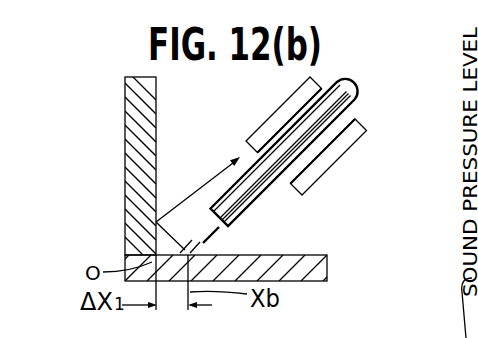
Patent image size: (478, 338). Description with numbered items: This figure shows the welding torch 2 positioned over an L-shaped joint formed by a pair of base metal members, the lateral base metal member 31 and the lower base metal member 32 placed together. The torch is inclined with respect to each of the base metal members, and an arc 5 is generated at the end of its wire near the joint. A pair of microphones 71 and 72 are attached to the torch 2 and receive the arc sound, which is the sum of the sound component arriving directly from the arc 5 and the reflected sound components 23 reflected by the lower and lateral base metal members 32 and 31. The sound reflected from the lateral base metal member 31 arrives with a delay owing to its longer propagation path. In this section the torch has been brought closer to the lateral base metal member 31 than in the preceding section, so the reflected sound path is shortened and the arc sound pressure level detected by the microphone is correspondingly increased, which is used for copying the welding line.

The welding torch 2 is at (340, 116).
The arc 5 is at (212, 249).
The reflected sound components 23 is at (203, 185).
The lateral base metal member 31 is at (132, 147).
The lower base metal member 32 is at (300, 283).
The microphone 71 is at (278, 110).
The microphone 72 is at (328, 154).